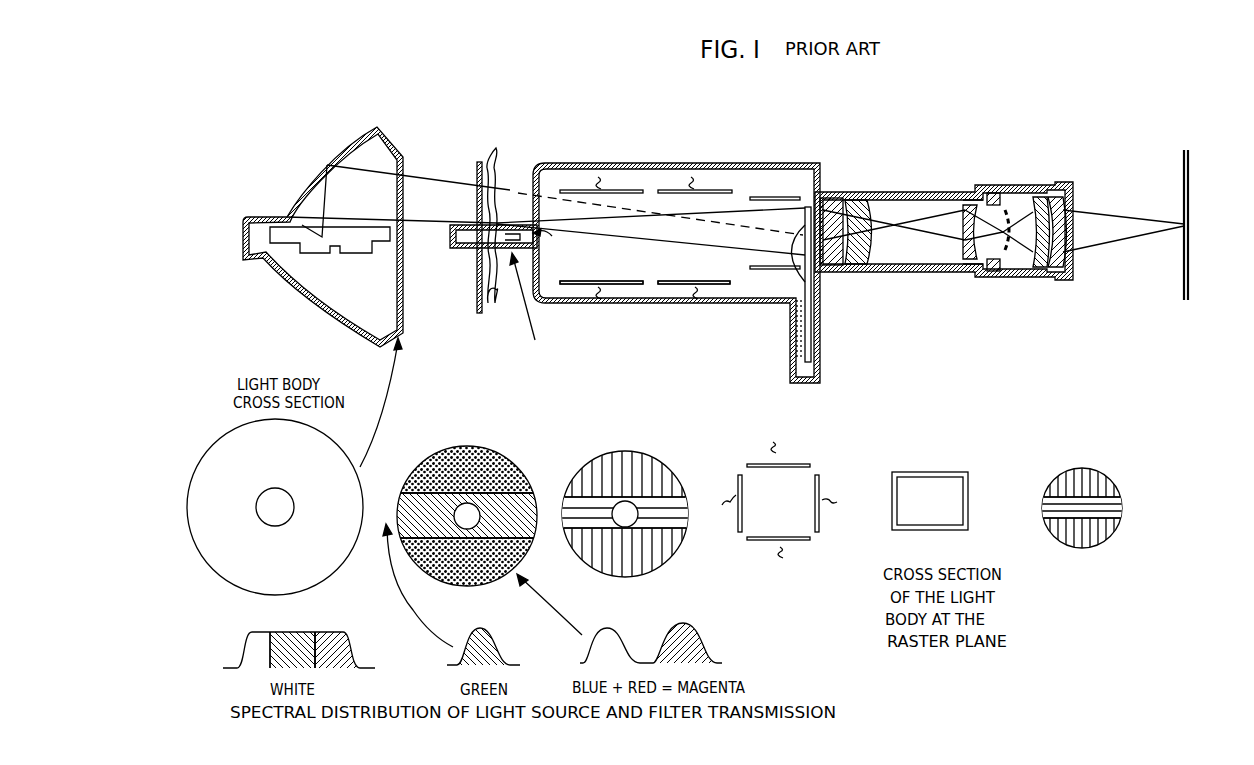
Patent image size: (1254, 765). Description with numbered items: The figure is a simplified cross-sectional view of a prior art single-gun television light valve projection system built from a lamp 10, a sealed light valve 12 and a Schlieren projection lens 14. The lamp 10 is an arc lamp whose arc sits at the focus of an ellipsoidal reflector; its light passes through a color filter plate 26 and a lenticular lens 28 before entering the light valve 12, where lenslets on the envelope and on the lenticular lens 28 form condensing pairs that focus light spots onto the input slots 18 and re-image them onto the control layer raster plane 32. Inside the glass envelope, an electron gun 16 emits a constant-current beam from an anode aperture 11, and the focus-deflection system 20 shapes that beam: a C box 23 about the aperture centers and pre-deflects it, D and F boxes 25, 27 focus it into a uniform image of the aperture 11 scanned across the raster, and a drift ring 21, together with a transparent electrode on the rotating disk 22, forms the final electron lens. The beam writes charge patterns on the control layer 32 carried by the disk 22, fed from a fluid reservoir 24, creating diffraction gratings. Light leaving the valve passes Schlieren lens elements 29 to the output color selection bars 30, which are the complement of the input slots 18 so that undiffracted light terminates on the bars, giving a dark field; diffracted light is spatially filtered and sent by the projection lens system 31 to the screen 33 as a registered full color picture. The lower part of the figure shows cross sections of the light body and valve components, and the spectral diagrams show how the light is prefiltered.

The lamp 10 is at (357, 138).
The anode aperture 11 is at (477, 317).
The sealed light valve 12 is at (743, 163).
The Schlieren projection lens 14 is at (962, 200).
The electron gun 16 is at (462, 225).
The input slots 18 is at (543, 307).
The focus-deflection system 20 is at (762, 316).
The drift ring 21 is at (773, 198).
The rotating disk 22 is at (812, 288).
The C box 23 is at (540, 245).
The fluid reservoir 24 is at (800, 343).
The D box 25 is at (607, 280).
The color filter plate 26 is at (448, 440).
The F box 27 is at (670, 280).
The lenticular lens 28 is at (492, 170).
The Schlieren lens elements 29 is at (963, 180).
The output color selection bars 30 is at (1017, 247).
The projection lens system 31 is at (1035, 178).
The control layer 32 is at (817, 310).
The screen 33 is at (1190, 162).